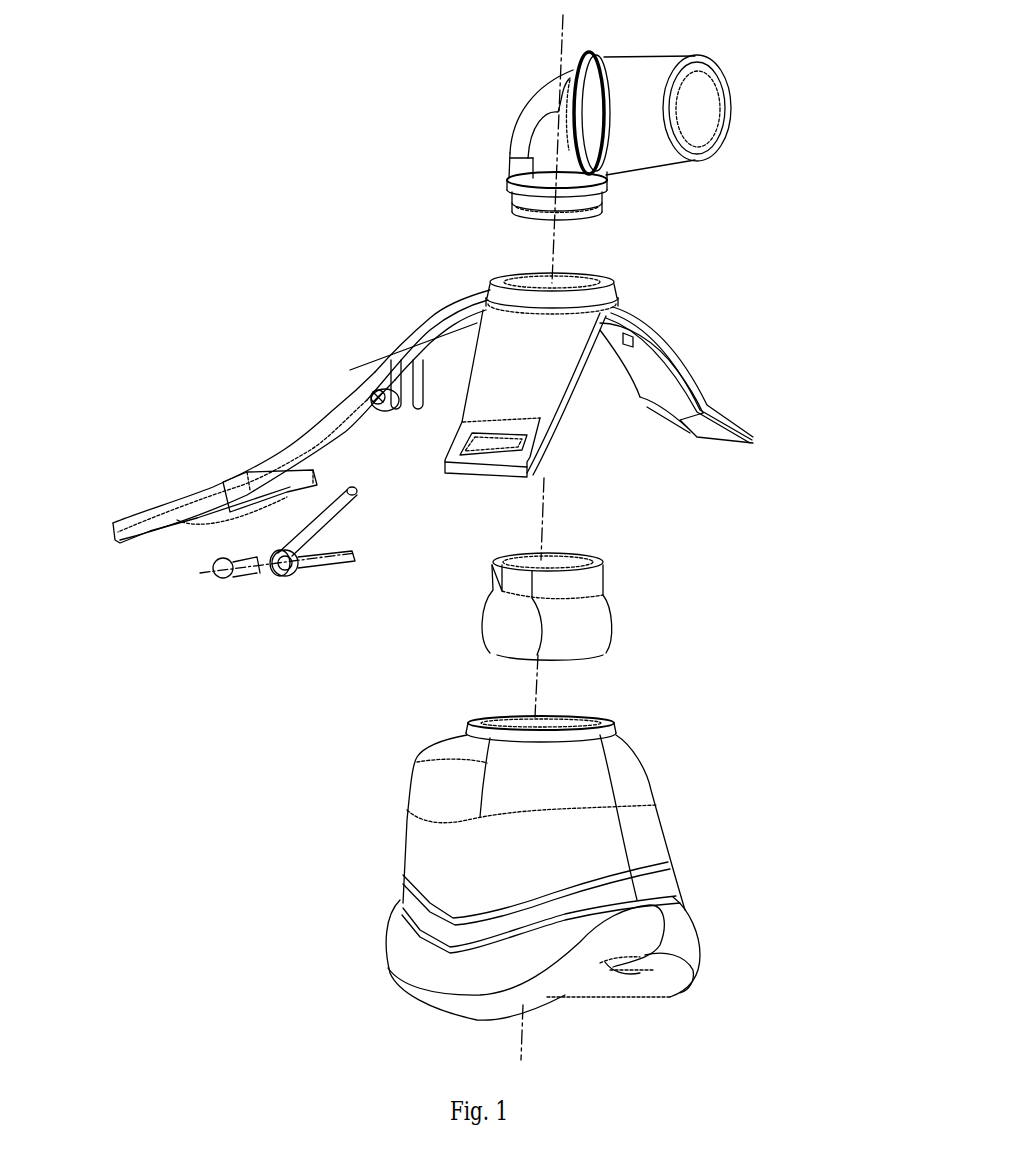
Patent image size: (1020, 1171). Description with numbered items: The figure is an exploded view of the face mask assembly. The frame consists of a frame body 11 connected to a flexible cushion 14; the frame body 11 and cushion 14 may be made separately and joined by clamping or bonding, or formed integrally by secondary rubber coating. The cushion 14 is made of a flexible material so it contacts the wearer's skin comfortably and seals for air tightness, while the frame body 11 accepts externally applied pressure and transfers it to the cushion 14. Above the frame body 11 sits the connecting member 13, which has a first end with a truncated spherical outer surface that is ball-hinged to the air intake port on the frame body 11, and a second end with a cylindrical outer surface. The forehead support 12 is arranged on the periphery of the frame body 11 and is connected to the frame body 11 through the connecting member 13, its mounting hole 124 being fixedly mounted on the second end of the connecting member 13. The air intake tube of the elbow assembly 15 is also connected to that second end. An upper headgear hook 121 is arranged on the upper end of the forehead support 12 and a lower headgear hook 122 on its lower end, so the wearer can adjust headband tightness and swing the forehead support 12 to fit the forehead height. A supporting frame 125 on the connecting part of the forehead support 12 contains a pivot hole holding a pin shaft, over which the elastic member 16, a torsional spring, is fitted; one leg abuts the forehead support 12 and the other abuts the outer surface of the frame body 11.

The frame body 11 is at (588, 790).
The forehead support 12 is at (538, 423).
The upper headgear hook 121 is at (162, 503).
The lower headgear hook 122 is at (474, 462).
The mounting hole 124 is at (513, 275).
The supporting frame 125 is at (387, 387).
The connecting member 13 is at (578, 618).
The cushion 14 is at (613, 986).
The elbow assembly 15 is at (632, 130).
The elastic member 16 is at (287, 603).